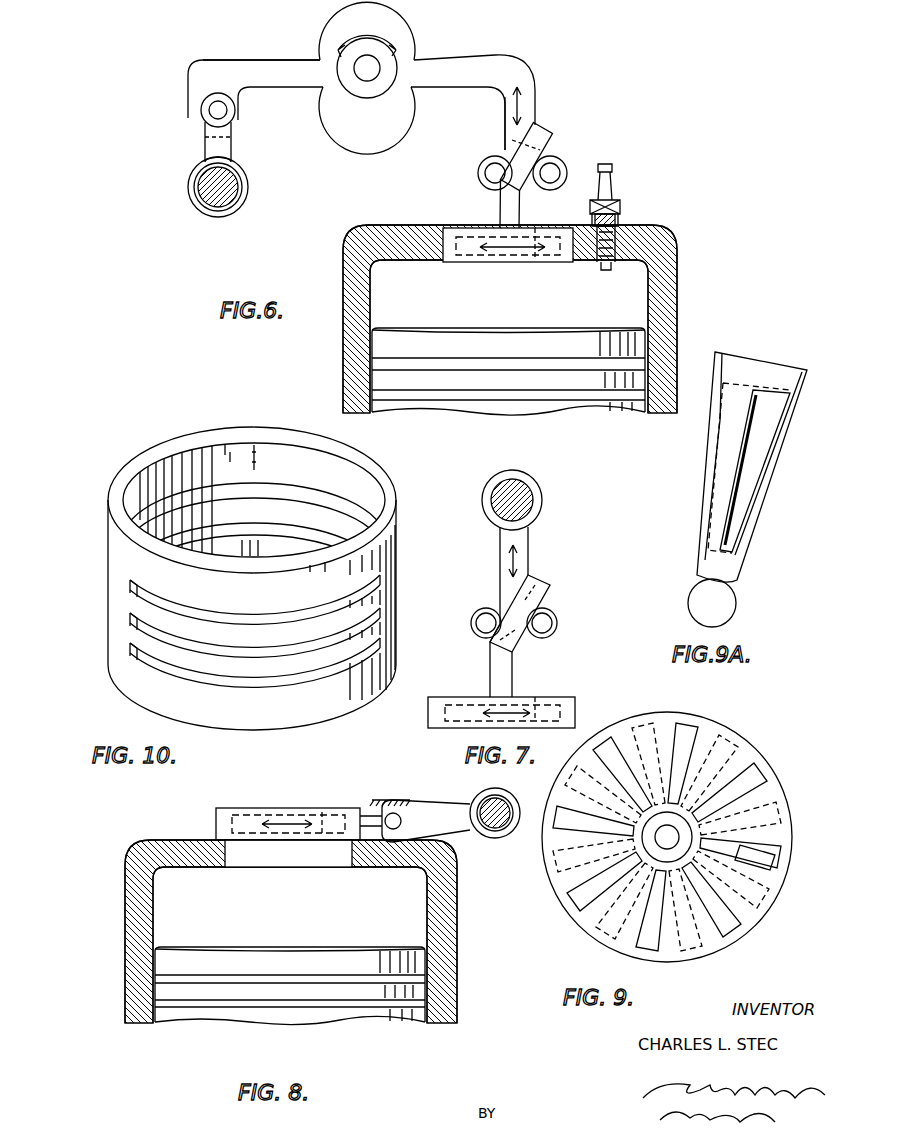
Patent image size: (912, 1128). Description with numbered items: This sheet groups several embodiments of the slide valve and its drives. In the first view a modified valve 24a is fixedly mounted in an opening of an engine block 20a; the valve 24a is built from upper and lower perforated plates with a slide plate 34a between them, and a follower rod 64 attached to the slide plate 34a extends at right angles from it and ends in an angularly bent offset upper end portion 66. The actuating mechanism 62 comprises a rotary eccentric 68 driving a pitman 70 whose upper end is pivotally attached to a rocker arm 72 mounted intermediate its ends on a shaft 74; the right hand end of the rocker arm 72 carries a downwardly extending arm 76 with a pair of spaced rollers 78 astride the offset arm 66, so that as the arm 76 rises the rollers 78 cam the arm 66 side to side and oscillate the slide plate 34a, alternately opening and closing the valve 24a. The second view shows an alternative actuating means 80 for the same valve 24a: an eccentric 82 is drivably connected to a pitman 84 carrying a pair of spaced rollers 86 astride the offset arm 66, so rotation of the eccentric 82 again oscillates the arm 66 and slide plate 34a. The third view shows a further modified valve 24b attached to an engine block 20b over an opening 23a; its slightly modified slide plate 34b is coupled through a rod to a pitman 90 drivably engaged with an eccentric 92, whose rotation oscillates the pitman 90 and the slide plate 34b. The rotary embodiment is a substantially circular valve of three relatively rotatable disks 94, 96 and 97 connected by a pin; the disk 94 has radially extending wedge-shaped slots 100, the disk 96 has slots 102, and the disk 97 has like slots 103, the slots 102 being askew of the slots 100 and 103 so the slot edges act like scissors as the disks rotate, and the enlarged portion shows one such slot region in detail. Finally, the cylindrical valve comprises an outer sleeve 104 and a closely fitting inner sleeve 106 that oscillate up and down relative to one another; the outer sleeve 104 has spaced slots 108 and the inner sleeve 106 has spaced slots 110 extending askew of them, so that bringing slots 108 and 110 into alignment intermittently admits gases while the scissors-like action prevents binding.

In FIG. 6, the engine block 20a is at (665, 290).
In FIG. 8, the engine block 20b is at (125, 867).
In FIG. 8, the opening 23a is at (348, 860).
In FIG. 6, the modified valve 24a is at (455, 228).
In FIG. 7, the modified valve 24a is at (468, 697).
In FIG. 8, the further modified valve 24b is at (216, 820).
In FIG. 6, the slide plate 34a is at (532, 226).
In FIG. 7, the slide plate 34a is at (535, 695).
In FIG. 8, the slide plate 34b is at (320, 810).
In FIG. 6, the valve actuating mechanism 62 is at (318, 126).
In FIG. 6, the follower rod 64 is at (500, 205).
In FIG. 6, the offset upper end portion 66 is at (515, 165).
In FIG. 7, the offset upper end portion 66 is at (548, 585).
In FIG. 6, the rotary eccentric 68 is at (206, 210).
In FIG. 6, the pitman 70 is at (205, 150).
In FIG. 6, the rocker arm 72 is at (280, 62).
In FIG. 6, the shaft 74 is at (380, 68).
In FIG. 6, the downwardly extending arm 76 is at (505, 113).
In FIG. 6, the spaced rollers 78 is at (488, 174).
In FIG. 7, the actuating means 80 is at (568, 537).
In FIG. 7, the eccentric 82 is at (540, 510).
In FIG. 7, the pitman 84 is at (500, 555).
In FIG. 7, the spaced rollers 86 is at (480, 620).
In FIG. 8, the pitman 90 is at (442, 812).
In FIG. 8, the eccentric 92 is at (498, 838).
In FIG. 9A, the disk 94 is at (760, 508).
In FIG. 9, the disk 94 is at (570, 908).
In FIG. 9A, the disk 96 is at (702, 480).
In FIG. 9, the disk 96 is at (715, 950).
In FIG. 9, the disk 97 is at (780, 835).
In FIG. 9A, the wedge-shaped slots 100 is at (740, 517).
In FIG. 9, the wedge-shaped slots 100 is at (703, 745).
In FIG. 9A, the slots 102 is at (710, 460).
In FIG. 9, the slots 102 is at (756, 745).
In FIG. 9, the slots 103 is at (775, 862).
In FIG. 10, the outer sleeve 104 is at (385, 490).
In FIG. 10, the inner sleeve 106 is at (370, 475).
In FIG. 10, the spaced slots 108 is at (135, 656).
In FIG. 10, the spaced slots 110 is at (254, 545).